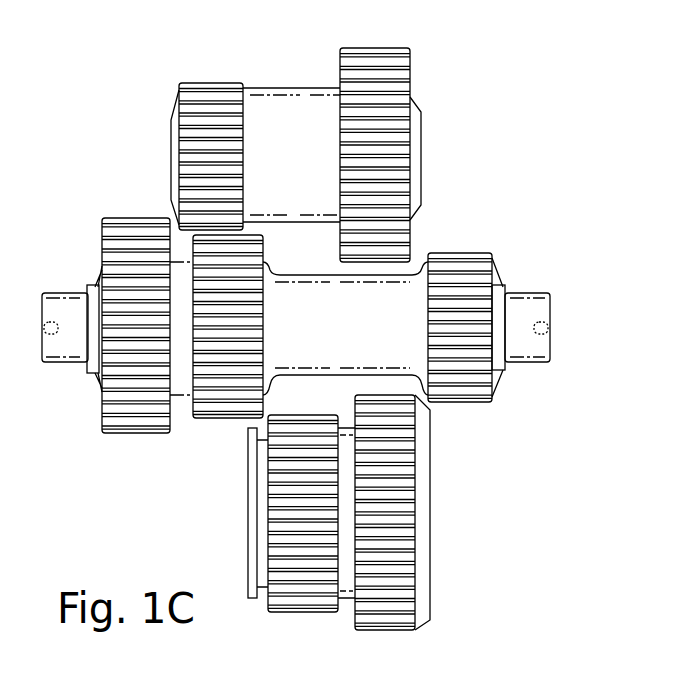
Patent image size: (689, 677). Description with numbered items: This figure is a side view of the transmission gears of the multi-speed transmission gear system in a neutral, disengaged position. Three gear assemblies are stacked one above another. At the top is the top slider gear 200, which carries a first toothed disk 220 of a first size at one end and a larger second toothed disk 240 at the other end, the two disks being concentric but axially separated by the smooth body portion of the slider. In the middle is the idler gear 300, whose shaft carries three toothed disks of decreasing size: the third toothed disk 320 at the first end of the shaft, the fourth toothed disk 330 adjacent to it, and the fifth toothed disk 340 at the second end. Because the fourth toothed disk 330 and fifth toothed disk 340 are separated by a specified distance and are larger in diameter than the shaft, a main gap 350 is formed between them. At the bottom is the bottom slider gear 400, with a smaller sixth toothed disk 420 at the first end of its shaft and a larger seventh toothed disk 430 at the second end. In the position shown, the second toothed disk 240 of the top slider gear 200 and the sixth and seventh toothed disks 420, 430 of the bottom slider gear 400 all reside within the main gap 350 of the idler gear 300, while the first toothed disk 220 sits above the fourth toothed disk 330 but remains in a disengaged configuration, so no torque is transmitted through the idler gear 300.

The top slider gear 200 is at (413, 180).
The first toothed disk 220 is at (204, 84).
The second toothed disk 240 is at (378, 48).
The idler gear 300 is at (550, 326).
The third toothed disk 320 is at (121, 433).
The fourth toothed disk 330 is at (210, 418).
The fifth toothed disk 340 is at (468, 402).
The main gap 350 is at (422, 246).
The bottom slider gear 400 is at (419, 518).
The sixth toothed disk 420 is at (293, 612).
The seventh toothed disk 430 is at (403, 630).